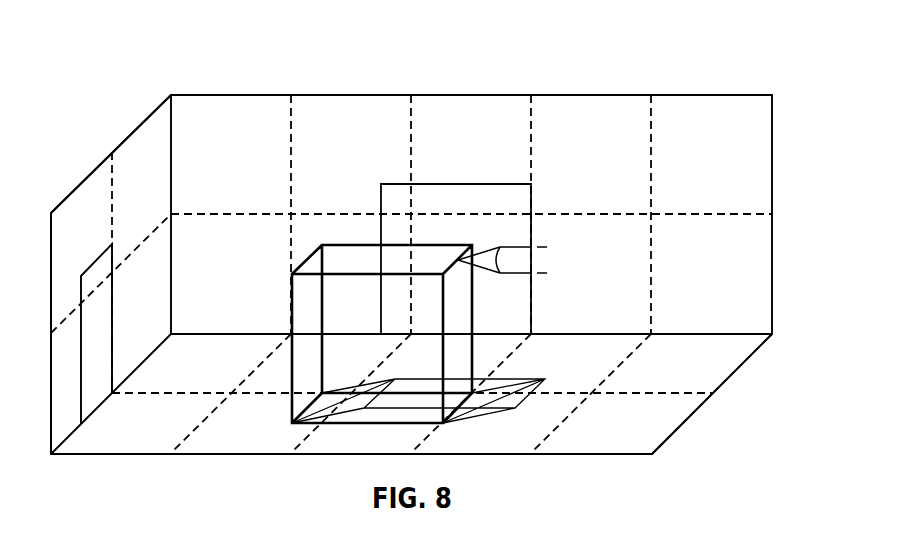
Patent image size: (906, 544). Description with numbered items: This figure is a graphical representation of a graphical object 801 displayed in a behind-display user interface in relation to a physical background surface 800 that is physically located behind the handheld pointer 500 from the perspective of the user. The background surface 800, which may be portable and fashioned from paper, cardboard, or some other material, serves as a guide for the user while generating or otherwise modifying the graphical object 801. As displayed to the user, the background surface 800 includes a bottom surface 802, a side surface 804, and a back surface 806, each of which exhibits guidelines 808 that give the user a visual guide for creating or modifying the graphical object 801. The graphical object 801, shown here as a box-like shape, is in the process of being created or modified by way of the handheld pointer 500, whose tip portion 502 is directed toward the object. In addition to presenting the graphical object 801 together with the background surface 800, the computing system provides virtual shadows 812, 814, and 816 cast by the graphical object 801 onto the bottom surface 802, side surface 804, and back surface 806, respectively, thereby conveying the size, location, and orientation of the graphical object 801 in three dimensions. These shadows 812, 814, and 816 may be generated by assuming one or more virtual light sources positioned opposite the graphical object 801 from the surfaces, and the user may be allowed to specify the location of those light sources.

The physical background surface 800 is at (472, 51).
The bottom surface 802 is at (723, 383).
The side surface 804 is at (142, 125).
The back surface 806 is at (367, 95).
The guidelines 808 is at (652, 140).
The virtual shadow 814 is at (81, 295).
The virtual shadow 816 is at (480, 184).
The graphical object 801 is at (368, 244).
The virtual shadow 812 is at (521, 396).
The handheld pointer 500 is at (508, 275).
The field of view cone 502 is at (476, 253).